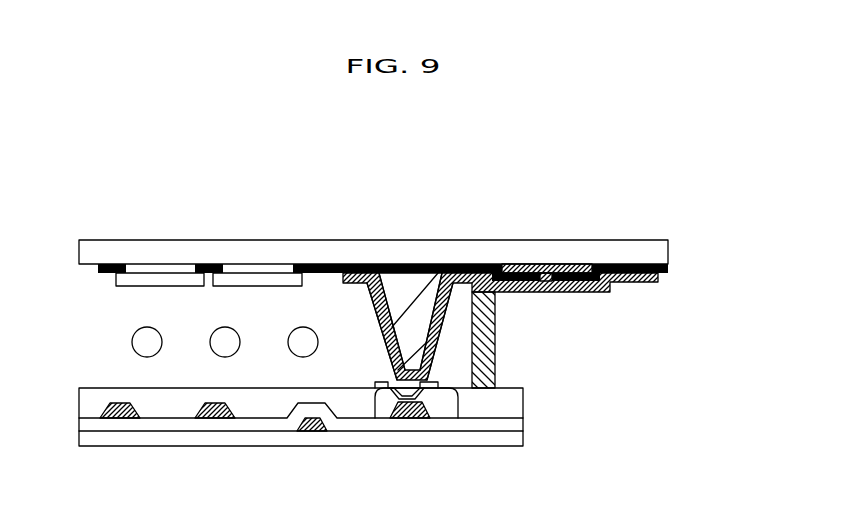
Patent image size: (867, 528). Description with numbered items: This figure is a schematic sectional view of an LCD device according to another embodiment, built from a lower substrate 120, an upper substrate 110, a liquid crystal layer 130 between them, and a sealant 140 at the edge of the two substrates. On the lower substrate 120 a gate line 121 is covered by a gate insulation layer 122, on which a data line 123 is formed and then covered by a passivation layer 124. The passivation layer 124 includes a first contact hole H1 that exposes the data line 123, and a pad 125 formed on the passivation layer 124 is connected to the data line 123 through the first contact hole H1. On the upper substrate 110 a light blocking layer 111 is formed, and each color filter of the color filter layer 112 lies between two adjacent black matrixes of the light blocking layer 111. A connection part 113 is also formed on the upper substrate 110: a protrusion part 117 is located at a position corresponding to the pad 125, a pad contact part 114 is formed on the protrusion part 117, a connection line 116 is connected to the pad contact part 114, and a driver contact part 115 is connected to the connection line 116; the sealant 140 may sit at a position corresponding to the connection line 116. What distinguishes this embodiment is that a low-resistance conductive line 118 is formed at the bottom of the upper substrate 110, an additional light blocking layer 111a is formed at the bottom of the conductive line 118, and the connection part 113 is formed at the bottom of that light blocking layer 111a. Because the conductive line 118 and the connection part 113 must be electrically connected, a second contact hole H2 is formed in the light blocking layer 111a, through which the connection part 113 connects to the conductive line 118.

The upper substrate 110 is at (668, 250).
The light blocking layer 111 is at (112, 266).
The light blocking layer 111a is at (668, 268).
The color filter layer 112 is at (158, 287).
The connection part 113 is at (500, 268).
The pad contact part 114 is at (358, 264).
The driver contact part 115 is at (517, 264).
The connection line 116 is at (470, 264).
The protrusion part 117 is at (416, 282).
The low-resistance conductive line 118 is at (580, 265).
The lower substrate 120 is at (523, 438).
The gate line 121 is at (316, 432).
The gate insulation layer 122 is at (523, 422).
The data line 123 is at (403, 406).
The passivation layer 124 is at (523, 400).
The pad 125 is at (450, 388).
The liquid crystal layer 130 is at (150, 346).
The sealant 140 is at (495, 350).
The first contact hole H1 is at (392, 394).
The second contact hole H2 is at (546, 285).